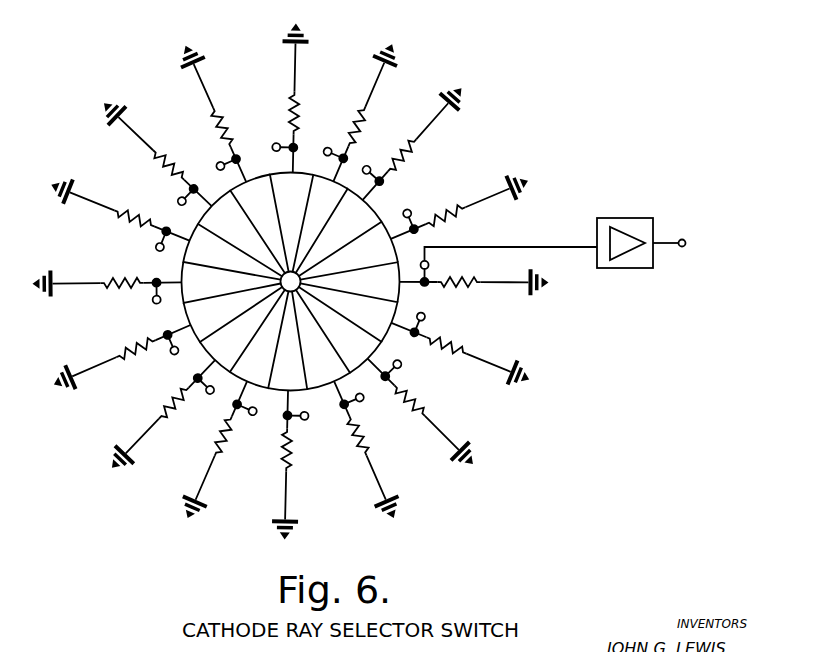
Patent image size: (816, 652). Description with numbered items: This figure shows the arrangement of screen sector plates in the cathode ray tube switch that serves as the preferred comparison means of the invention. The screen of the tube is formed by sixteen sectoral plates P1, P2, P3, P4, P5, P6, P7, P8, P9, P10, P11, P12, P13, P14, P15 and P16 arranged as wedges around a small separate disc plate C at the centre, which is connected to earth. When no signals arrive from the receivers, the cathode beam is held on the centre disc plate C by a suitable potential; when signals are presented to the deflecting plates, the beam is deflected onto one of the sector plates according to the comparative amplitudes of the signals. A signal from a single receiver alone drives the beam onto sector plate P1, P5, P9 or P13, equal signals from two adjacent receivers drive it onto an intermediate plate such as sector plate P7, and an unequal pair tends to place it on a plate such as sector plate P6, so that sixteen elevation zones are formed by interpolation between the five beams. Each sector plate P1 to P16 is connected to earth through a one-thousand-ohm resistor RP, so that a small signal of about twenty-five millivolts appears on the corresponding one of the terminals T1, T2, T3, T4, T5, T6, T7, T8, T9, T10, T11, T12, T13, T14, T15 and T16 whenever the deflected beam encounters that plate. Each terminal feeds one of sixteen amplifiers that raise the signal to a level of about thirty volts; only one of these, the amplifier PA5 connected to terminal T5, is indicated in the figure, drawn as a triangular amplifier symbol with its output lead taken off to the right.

The sector plate P1 is at (291, 222).
The sector plate P2 is at (320, 223).
The sector plate P3 is at (339, 231).
The sector plate P4 is at (348, 249).
The sector plate P5 is at (349, 282).
The sector plate P6 is at (348, 312).
The sector plate P7 is at (340, 330).
The sector plate P8 is at (323, 339).
The sector plate P9 is at (287, 340).
The sector plate P10 is at (259, 339).
The sector plate P11 is at (242, 331).
The sector plate P12 is at (233, 314).
The sector plate P13 is at (231, 282).
The sector plate P14 is at (231, 252).
The sector plate P15 is at (240, 234).
The sector plate P16 is at (257, 224).
The centre disc plate C is at (300, 282).
The terminal T1 is at (279, 98).
The terminal T2 is at (358, 111).
The terminal T3 is at (409, 141).
The terminal T4 is at (458, 206).
The terminal T5 is at (473, 277).
The terminal T6 is at (461, 342).
The terminal T7 is at (422, 408).
The terminal T8 is at (367, 448).
The terminal T9 is at (302, 465).
The terminal T10 is at (226, 451).
The terminal T11 is at (167, 416).
The terminal T12 is at (124, 358).
The terminal T13 is at (106, 294).
The terminal T14 is at (118, 222).
The terminal T15 is at (154, 161).
The terminal T16 is at (212, 116).
The resistor RP is at (293, 281).
The amplifier PA5 is at (555, 230).